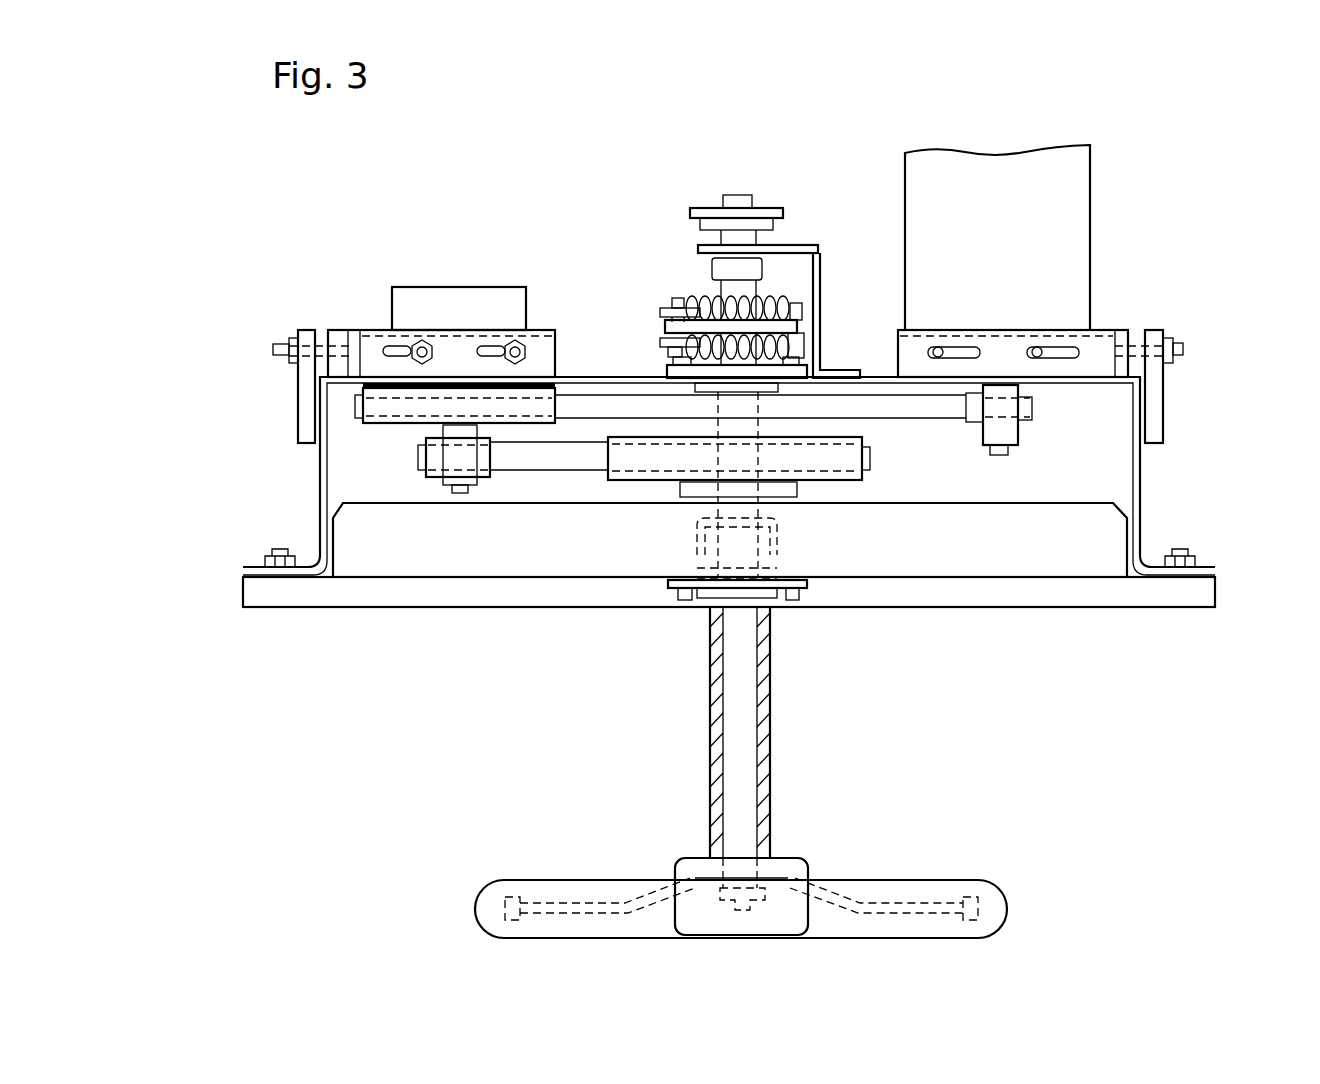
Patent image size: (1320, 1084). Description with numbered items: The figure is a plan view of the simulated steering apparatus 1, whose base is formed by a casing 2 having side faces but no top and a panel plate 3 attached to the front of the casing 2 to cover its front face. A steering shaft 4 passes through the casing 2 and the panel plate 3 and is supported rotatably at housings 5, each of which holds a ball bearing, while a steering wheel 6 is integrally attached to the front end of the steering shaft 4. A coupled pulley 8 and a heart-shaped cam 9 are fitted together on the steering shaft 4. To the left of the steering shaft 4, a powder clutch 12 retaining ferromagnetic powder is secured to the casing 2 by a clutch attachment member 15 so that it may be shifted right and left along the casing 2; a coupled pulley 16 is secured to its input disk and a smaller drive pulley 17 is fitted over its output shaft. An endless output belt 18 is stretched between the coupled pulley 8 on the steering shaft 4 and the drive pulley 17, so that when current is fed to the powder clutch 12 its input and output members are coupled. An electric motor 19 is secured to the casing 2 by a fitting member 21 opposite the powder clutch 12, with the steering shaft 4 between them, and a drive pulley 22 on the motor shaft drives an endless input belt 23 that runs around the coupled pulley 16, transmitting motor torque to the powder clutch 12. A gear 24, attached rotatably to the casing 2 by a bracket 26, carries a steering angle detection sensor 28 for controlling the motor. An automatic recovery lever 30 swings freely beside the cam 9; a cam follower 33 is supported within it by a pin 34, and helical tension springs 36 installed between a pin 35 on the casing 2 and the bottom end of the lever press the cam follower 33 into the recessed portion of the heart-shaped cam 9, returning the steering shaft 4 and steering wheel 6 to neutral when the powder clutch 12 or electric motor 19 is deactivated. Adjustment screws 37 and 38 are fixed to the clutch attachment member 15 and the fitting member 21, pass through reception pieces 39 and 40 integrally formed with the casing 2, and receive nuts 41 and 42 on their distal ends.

The simulated steering apparatus 1 is at (583, 648).
The casing 2 is at (1148, 506).
The panel plate 3 is at (985, 578).
The steering shaft 4 is at (740, 752).
The housing 5 is at (668, 370).
The steering wheel 6 is at (947, 888).
The coupled pulley 8 is at (866, 473).
The heart-shaped cam 9 is at (803, 340).
The powder clutch 12 is at (468, 300).
The clutch attachment member 15 is at (538, 348).
The coupled pulley 16 is at (390, 425).
The drive pulley 17 is at (440, 486).
The endless output belt 18 is at (548, 472).
The electric motor 19 is at (1072, 228).
The fitting member 21 is at (1095, 343).
The drive pulley 22 is at (1018, 432).
The endless input belt 23 is at (928, 410).
The gear 24 is at (760, 210).
The bracket 26 is at (800, 322).
The steering angle detection sensor 28 is at (778, 247).
The automatic recovery lever 30 is at (690, 300).
The cam follower 33 is at (665, 338).
The pin 34 is at (670, 306).
The pin 35 is at (816, 248).
The helical tension spring 36 is at (703, 300).
The adjustment screw 37 is at (273, 347).
The adjustment screw 38 is at (1184, 348).
The reception piece 39 is at (301, 407).
The reception piece 40 is at (1158, 431).
The nut 41 is at (293, 344).
The nut 42 is at (1174, 362).